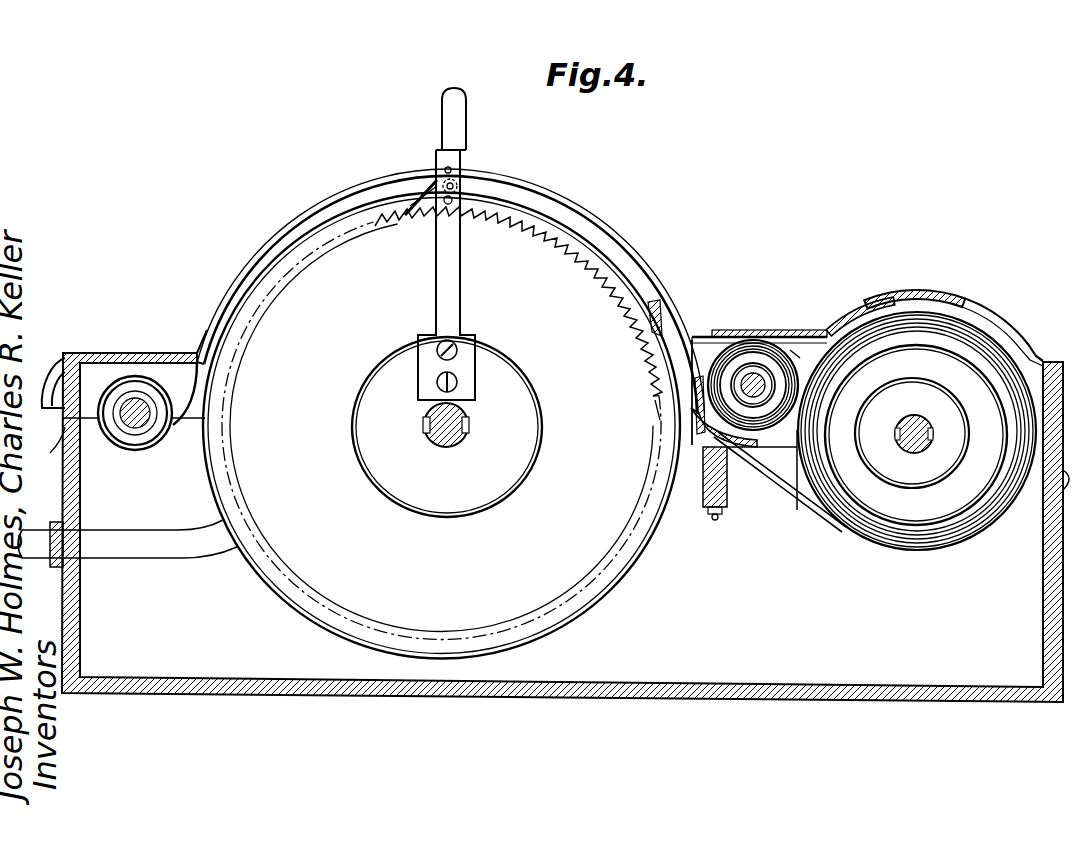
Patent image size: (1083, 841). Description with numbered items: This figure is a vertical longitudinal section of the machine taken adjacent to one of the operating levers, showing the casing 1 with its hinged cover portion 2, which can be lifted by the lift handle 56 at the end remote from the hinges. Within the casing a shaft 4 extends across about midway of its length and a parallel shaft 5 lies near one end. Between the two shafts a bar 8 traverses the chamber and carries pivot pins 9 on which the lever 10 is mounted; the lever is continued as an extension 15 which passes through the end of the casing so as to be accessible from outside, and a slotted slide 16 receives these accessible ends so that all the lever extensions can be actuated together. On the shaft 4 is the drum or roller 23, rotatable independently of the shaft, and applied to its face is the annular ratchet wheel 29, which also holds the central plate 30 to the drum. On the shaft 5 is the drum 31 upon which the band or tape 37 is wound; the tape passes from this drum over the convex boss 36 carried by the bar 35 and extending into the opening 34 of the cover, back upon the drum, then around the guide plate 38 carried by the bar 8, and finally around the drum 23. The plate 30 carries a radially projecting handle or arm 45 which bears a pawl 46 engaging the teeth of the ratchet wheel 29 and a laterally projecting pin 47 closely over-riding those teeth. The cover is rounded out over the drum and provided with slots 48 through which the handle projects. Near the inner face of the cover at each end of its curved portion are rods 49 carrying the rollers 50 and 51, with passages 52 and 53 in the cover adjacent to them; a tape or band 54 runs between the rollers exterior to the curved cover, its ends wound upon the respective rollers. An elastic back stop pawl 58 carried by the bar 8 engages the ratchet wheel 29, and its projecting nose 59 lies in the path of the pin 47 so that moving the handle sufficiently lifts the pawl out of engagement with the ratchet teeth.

The casing 1 is at (815, 698).
The cover portion 2 is at (764, 360).
The shaft 4 is at (447, 448).
The shaft 5 is at (915, 448).
The bar 8 is at (726, 508).
The pivot pins 9 is at (712, 515).
The lever 10 is at (828, 508).
The extension 15 is at (142, 540).
The slide 16 is at (56, 570).
The roller 23 is at (632, 570).
The annular ratchet wheel 29 is at (650, 292).
The central plate 30 is at (520, 388).
The drum 31 is at (968, 368).
The opening 34 is at (842, 326).
The bar 35 is at (940, 304).
The convex bosses 36 is at (895, 312).
The band or tape 37 is at (210, 447).
The guide plate 38 is at (752, 450).
The handle or arm 45 is at (462, 294).
The pawl 46 is at (428, 198).
The laterally projecting pin 47 is at (462, 192).
The slots 48 is at (640, 262).
The rods 49 is at (133, 398).
The roller 50 is at (150, 390).
The roller 51 is at (795, 348).
The passage 52 is at (200, 352).
The passage 53 is at (704, 328).
The tape or band 54 is at (584, 204).
The lift handle 56 is at (58, 365).
The elastic back stop pawl 58 is at (672, 376).
The projecting nose 59 is at (642, 322).